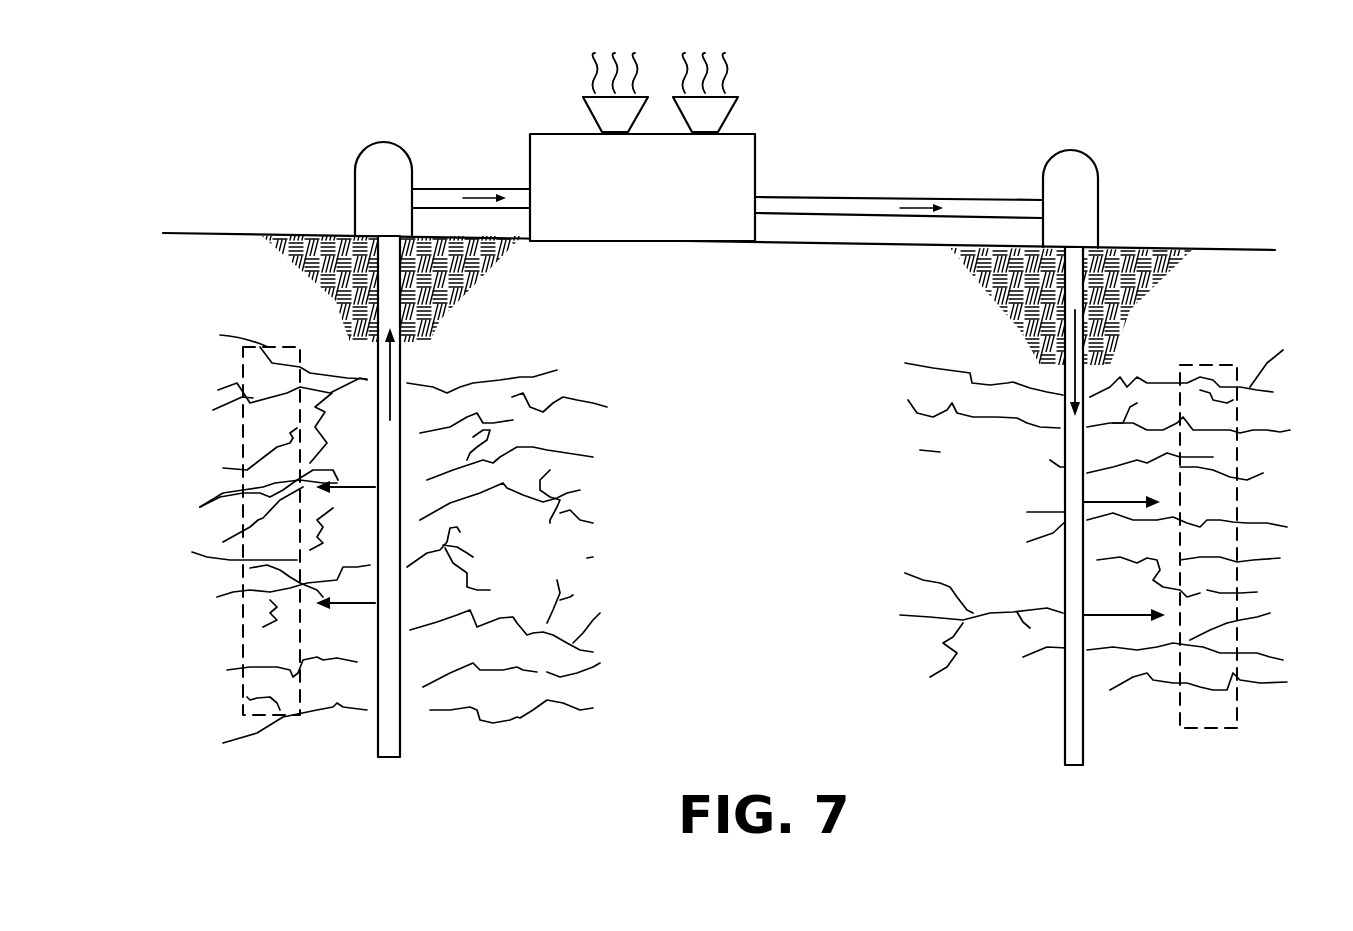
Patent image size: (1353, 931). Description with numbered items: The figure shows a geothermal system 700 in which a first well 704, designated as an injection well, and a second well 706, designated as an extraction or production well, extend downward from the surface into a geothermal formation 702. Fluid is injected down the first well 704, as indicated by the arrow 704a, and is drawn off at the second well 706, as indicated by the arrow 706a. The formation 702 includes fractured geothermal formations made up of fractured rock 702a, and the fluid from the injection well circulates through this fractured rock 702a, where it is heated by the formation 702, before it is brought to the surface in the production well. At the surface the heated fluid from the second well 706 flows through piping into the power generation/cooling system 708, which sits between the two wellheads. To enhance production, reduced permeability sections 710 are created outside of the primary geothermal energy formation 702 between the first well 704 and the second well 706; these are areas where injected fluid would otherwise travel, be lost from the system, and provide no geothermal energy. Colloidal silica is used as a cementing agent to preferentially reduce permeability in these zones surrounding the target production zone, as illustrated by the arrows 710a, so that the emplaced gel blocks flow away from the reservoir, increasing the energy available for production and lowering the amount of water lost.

The geothermal system 700 is at (950, 84).
The geothermal formation 702 is at (800, 549).
The fractured rock 702a is at (558, 560).
The first well 704 is at (1100, 177).
The arrow 704a is at (1066, 366).
The second well 706 is at (397, 142).
The arrow 706a is at (398, 368).
The power generation/cooling system 708 is at (690, 203).
The reduced permeability sections 710 is at (272, 348).
The arrows 710a is at (240, 557).